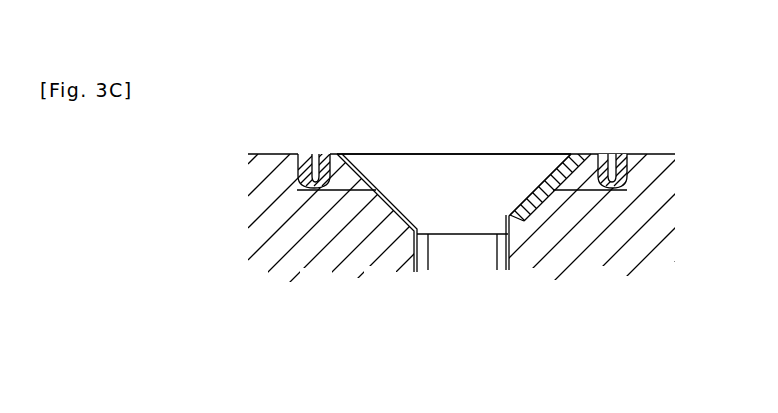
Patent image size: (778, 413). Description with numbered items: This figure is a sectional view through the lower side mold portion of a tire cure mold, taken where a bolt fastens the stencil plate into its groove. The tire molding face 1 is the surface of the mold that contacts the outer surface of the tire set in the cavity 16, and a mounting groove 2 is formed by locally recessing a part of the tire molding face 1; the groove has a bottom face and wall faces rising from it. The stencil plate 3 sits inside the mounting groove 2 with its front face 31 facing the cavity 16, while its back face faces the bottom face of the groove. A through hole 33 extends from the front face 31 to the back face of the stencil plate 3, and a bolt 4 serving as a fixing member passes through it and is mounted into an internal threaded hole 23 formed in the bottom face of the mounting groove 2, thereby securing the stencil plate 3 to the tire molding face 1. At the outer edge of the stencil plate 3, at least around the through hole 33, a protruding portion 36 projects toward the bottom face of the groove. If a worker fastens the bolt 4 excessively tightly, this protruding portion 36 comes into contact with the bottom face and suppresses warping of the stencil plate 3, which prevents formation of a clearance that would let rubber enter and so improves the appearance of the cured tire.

The tire molding face 1 is at (280, 153).
The mounting groove 2 is at (336, 204).
The stencil plate 3 is at (588, 136).
The bolt 4 is at (497, 153).
The cavity 16 is at (458, 96).
The internal threaded hole 23 is at (508, 245).
The front face 31 is at (330, 153).
The through hole 33 is at (400, 222).
The protruding portion 36 is at (312, 192).